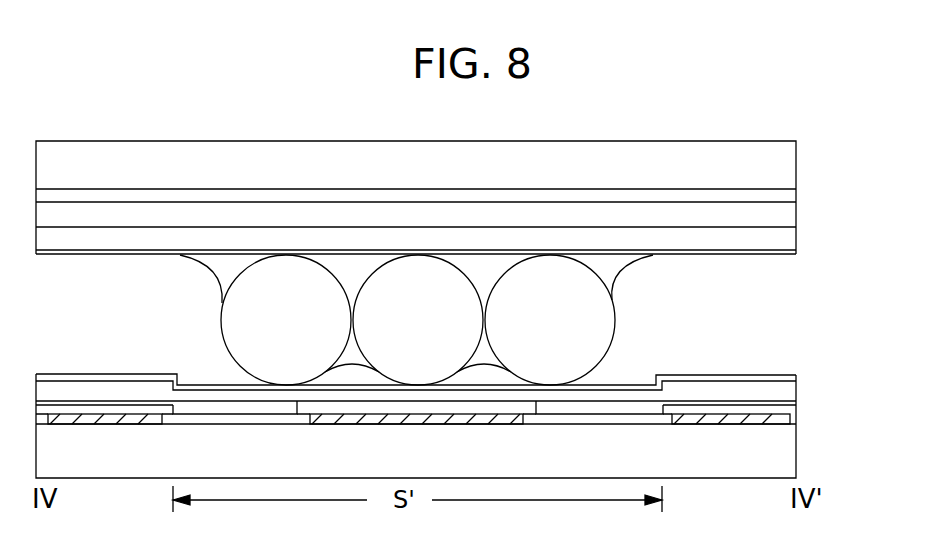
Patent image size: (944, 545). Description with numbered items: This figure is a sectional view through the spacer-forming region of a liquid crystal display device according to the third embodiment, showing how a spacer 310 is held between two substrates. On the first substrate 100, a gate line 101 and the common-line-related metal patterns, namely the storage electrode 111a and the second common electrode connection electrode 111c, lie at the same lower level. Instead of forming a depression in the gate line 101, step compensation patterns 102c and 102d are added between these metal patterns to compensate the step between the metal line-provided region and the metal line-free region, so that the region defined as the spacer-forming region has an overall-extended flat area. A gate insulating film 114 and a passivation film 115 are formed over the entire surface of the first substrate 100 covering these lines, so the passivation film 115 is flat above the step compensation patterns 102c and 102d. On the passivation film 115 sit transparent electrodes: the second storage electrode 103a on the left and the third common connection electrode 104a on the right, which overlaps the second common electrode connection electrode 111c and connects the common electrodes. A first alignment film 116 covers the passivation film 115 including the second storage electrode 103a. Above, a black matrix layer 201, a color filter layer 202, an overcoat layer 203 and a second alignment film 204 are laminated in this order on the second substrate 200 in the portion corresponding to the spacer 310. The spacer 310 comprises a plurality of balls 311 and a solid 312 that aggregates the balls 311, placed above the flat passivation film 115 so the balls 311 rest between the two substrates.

The first substrate 100 is at (788, 449).
The gate line 101 is at (416, 420).
The step compensation pattern 102c is at (607, 408).
The step compensation pattern 102d is at (240, 408).
The second storage electrode 103a is at (76, 385).
The third common connection electrode 104a is at (794, 384).
The storage electrode 111a is at (97, 416).
The second common electrode connection electrode 111c is at (747, 423).
The gate insulating film 114 is at (795, 410).
The passivation film 115 is at (790, 395).
The first alignment film 116 is at (785, 377).
The second substrate 200 is at (788, 159).
The black matrix layer 201 is at (788, 190).
The color filter layer 202 is at (788, 216).
The overcoat layer 203 is at (788, 243).
The second alignment film 204 is at (796, 254).
The spacer 310 is at (474, 320).
The spacer balls 311 is at (585, 316).
The solid 312 is at (613, 273).